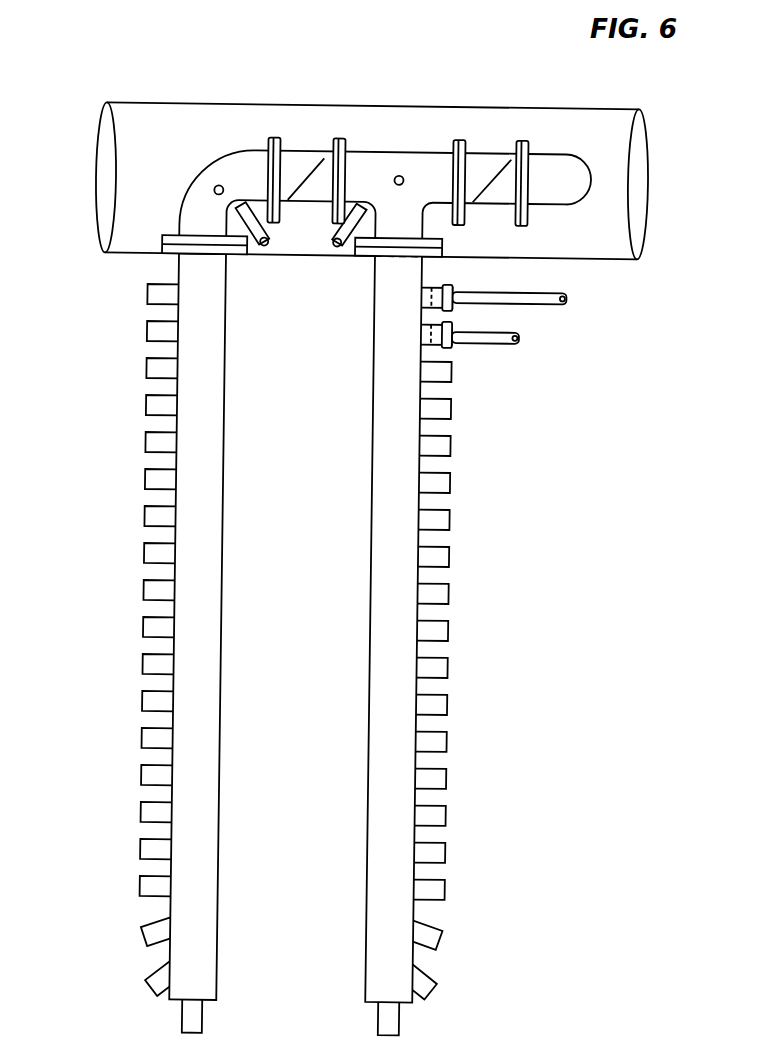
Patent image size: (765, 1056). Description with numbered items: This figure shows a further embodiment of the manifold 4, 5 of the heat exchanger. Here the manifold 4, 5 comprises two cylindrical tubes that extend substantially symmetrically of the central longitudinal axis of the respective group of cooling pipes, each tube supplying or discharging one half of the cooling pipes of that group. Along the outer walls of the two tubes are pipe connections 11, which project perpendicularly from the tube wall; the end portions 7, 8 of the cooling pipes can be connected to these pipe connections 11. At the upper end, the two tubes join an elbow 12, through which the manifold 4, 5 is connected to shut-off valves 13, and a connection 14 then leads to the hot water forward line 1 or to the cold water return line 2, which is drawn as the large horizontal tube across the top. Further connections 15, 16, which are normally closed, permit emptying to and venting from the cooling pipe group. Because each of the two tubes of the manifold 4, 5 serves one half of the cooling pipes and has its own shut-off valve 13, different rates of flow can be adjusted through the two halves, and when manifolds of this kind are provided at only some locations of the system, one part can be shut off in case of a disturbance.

The hot water forward line 1 is at (372, 162).
The cold water return line 2 is at (155, 136).
The manifold 4 is at (298, 628).
The manifold 5 is at (176, 498).
The end portion of cooling pipe 7 is at (498, 341).
The end portion of cooling pipe 8 is at (510, 298).
The pipe connection 11 is at (153, 668).
The elbow 12 is at (202, 208).
The shut-off valve 13 is at (297, 158).
The connection 14 is at (560, 170).
The connection 15 is at (212, 189).
The connection 16 is at (325, 248).